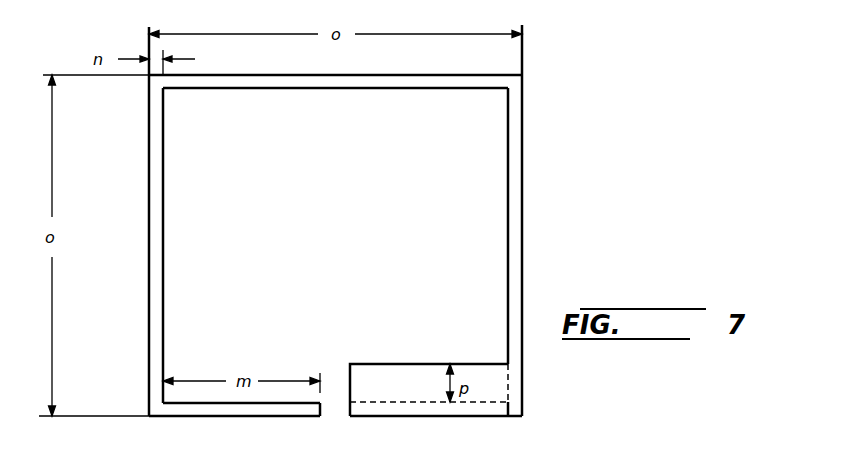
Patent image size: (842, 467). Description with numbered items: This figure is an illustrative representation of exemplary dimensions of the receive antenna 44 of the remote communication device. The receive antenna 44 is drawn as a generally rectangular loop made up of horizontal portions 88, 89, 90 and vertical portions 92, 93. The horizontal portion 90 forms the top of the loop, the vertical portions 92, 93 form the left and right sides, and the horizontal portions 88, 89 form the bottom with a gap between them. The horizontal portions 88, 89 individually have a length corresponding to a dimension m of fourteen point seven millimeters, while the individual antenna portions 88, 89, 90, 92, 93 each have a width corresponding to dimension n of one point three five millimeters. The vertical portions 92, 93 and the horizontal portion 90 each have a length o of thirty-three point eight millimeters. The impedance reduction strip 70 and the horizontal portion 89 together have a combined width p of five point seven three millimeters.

The receive antenna 44 is at (494, 23).
The horizontal portion 90 is at (227, 88).
The vertical portion 92 is at (148, 250).
The vertical portion 93 is at (515, 195).
The horizontal portion 88 is at (222, 417).
The horizontal portion 89 is at (411, 403).
The impedance reduction strip 70 is at (340, 373).